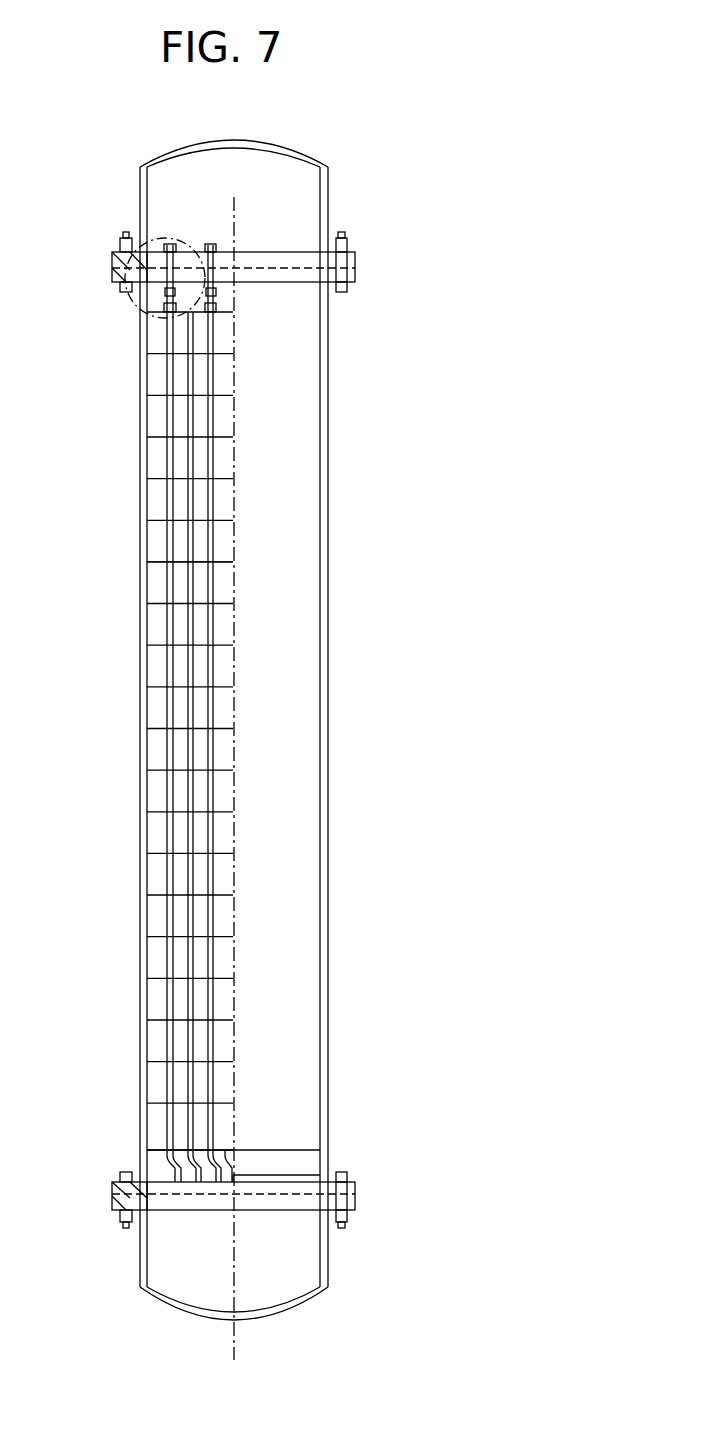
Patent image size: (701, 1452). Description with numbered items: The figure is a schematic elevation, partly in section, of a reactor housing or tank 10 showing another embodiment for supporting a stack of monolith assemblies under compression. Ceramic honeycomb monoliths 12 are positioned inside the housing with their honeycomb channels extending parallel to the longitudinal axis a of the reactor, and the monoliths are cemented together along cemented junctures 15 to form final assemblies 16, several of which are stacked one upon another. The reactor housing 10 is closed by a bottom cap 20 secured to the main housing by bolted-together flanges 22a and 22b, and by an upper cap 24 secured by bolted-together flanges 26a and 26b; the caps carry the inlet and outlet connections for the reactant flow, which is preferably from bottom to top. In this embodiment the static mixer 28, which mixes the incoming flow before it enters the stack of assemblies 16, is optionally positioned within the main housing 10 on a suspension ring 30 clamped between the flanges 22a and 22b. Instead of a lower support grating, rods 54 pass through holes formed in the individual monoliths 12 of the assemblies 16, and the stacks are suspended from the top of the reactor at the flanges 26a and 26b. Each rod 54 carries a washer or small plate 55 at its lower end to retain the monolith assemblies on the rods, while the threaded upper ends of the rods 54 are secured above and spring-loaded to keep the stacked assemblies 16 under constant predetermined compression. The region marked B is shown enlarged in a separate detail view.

The reactor housing 10 is at (328, 356).
The ceramic honeycomb monolith 12 is at (178, 340).
The cemented junctures 15 is at (185, 482).
The final assembly 16 is at (200, 410).
The bottom cap 20 is at (280, 1312).
The flange 22a is at (355, 1185).
The flange 22b is at (352, 1208).
The upper cap 24 is at (272, 147).
The flange 26a is at (355, 278).
The flange 26b is at (355, 256).
The static mixer 28 is at (167, 1167).
The suspension ring 30 is at (180, 1193).
The rod 54 is at (200, 578).
The washer or small plate 55 is at (168, 1167).
The longitudinal axis a is at (237, 233).
The detail region B is at (150, 235).